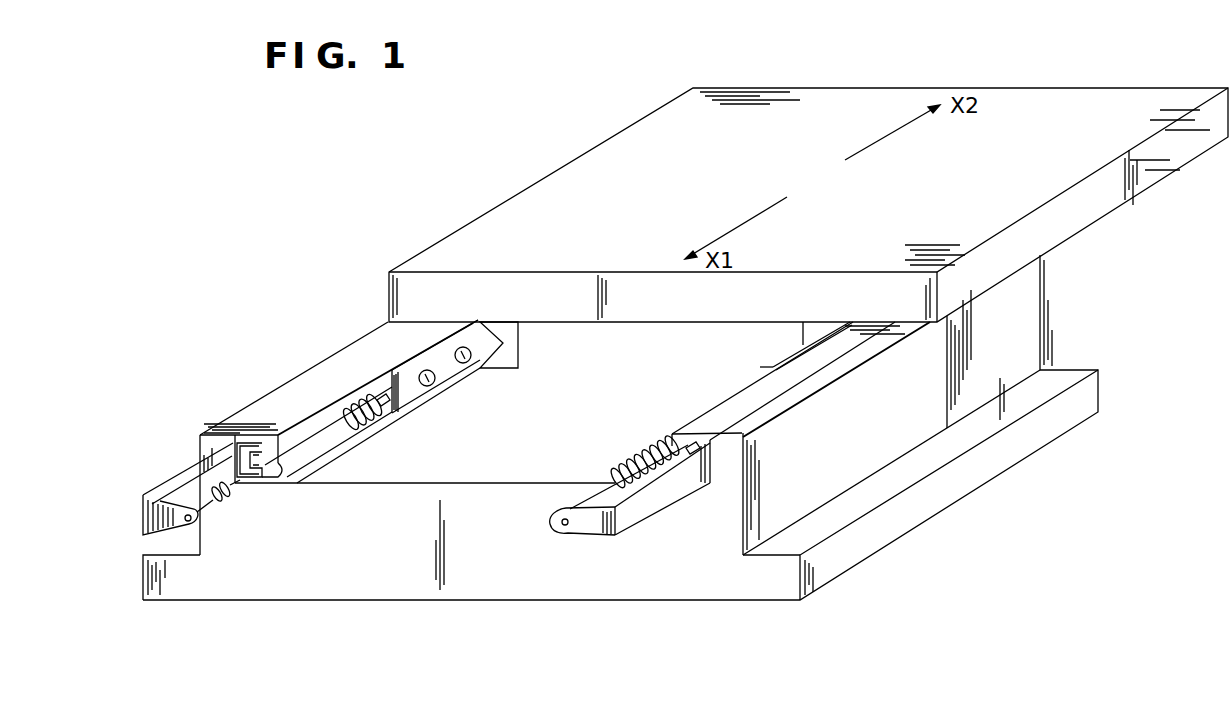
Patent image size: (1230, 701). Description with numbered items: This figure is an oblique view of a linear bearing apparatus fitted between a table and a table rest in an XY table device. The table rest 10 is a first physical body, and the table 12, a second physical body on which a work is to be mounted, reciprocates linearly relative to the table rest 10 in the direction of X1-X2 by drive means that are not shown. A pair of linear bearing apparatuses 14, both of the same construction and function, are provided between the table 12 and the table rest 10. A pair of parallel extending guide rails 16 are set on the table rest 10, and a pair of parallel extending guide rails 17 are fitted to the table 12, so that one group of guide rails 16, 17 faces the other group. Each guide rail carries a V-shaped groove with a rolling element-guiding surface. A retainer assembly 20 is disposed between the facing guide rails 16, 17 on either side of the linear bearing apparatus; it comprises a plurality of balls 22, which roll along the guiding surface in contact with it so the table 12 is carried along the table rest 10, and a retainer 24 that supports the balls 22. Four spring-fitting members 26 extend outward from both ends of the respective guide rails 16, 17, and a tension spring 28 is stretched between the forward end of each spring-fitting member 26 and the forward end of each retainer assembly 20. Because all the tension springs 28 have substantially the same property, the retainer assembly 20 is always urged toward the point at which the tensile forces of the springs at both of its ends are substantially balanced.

The table rest 10 is at (642, 600).
The table 12 is at (1090, 97).
The linear bearing apparatus 14 is at (340, 343).
The guide rail 16 is at (428, 336).
The guide rail 17 is at (497, 332).
The retainer assembly 20 is at (444, 369).
The balls 22 is at (428, 383).
The retainer 24 is at (405, 400).
The spring-fitting member 26 is at (183, 488).
The tension spring 28 is at (356, 415).